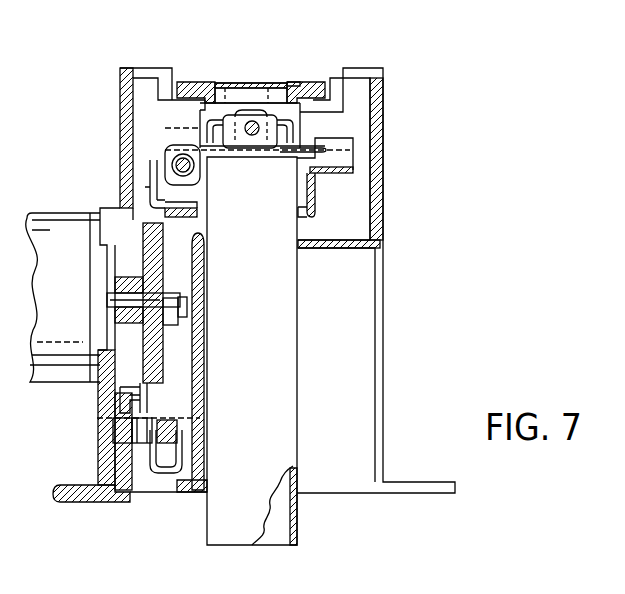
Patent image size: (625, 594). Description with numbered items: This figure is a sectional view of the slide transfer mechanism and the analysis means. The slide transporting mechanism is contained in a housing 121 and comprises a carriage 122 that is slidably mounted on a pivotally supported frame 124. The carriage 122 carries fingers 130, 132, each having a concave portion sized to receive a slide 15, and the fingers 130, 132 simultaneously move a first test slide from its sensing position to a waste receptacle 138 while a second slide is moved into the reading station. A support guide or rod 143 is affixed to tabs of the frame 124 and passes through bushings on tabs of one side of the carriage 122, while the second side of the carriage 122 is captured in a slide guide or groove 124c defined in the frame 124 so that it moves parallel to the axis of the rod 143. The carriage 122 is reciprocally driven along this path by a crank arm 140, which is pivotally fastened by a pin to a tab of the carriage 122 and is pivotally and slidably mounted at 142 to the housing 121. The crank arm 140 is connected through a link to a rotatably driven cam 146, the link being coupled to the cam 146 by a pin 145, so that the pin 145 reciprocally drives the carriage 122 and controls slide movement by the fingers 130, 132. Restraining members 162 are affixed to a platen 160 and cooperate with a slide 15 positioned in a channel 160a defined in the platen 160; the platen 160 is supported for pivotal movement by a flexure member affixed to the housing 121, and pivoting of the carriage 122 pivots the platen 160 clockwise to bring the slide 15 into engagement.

The slide 15 is at (245, 81).
The housing 121 is at (97, 452).
The carriage 122 is at (228, 107).
The frame 124 is at (313, 200).
The slide guide or groove 124c is at (327, 147).
The finger 130 is at (228, 83).
The finger 132 is at (273, 84).
The waste receptacle 138 is at (273, 400).
The crank arm 140 is at (155, 208).
The pivotal and slidable mounting 142 is at (170, 443).
The support guide or rod 143 is at (165, 146).
The pin 145 is at (182, 312).
The cam 146 is at (170, 236).
The platen 160 is at (284, 54).
The channel 160a is at (285, 79).
The restraining members 162 is at (197, 80).